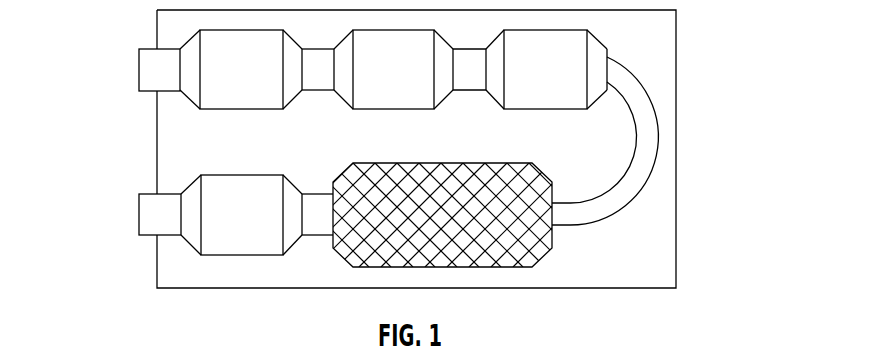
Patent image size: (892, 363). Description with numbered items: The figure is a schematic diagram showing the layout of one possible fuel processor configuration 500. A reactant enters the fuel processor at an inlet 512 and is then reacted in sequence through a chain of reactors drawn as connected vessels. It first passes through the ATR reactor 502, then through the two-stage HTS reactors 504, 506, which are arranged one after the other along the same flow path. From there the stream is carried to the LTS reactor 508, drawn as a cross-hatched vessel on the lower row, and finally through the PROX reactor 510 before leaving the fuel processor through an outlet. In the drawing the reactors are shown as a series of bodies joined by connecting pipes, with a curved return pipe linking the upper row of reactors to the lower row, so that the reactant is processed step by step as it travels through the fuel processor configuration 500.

The fuel processor configuration 500 is at (692, 93).
The ATR reactor 502 is at (241, 69).
The HTS reactor 504 is at (393, 69).
The HTS reactor 506 is at (546, 69).
The LTS reactor 508 is at (452, 201).
The PROX reactor 510 is at (241, 215).
The inlet 512 is at (118, 136).